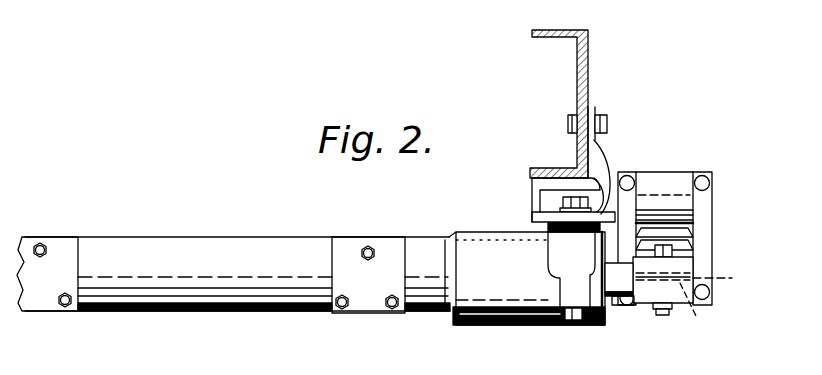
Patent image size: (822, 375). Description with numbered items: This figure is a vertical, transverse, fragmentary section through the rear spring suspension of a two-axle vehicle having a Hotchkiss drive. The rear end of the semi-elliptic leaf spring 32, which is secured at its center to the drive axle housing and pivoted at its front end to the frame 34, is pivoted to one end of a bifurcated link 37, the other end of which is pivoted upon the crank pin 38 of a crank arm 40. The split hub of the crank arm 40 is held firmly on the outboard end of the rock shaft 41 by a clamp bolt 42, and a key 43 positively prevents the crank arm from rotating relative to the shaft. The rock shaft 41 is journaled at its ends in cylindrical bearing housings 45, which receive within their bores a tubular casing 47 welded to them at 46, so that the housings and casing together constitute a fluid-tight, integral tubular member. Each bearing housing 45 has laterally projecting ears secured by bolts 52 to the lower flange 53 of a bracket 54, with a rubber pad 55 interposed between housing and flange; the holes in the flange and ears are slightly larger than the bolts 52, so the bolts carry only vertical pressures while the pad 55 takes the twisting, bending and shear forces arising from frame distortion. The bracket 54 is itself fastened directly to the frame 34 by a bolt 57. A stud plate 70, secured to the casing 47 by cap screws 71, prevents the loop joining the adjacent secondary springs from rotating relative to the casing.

The semi-elliptic leaf spring 32 is at (664, 214).
The frame 34 is at (590, 38).
The bifurcated link 37 is at (700, 170).
The crank pin 38 is at (722, 278).
The crank arm 40 is at (640, 305).
The rock shaft 41 is at (612, 290).
The clamp bolt 42 is at (664, 318).
The key 43 is at (698, 309).
The bearing housing 45 is at (529, 278).
The weld 46 is at (434, 259).
The tubular casing 47 is at (240, 271).
The bolt 52 is at (560, 204).
The lower flange 53 is at (534, 216).
The bracket 54 is at (546, 164).
The pad 55 is at (540, 228).
The bolt 57 is at (608, 122).
The stud plate 70 is at (30, 242).
The cap screw 71 is at (47, 258).